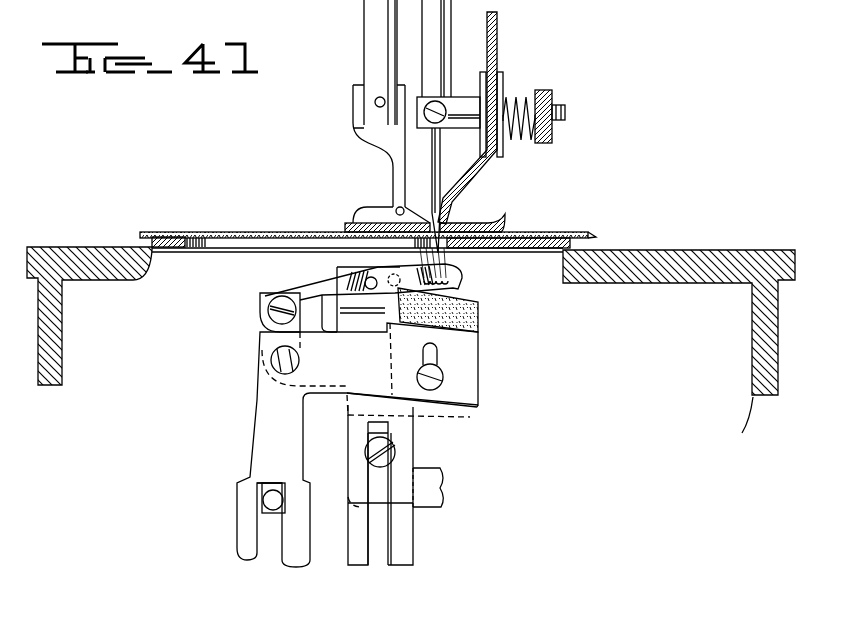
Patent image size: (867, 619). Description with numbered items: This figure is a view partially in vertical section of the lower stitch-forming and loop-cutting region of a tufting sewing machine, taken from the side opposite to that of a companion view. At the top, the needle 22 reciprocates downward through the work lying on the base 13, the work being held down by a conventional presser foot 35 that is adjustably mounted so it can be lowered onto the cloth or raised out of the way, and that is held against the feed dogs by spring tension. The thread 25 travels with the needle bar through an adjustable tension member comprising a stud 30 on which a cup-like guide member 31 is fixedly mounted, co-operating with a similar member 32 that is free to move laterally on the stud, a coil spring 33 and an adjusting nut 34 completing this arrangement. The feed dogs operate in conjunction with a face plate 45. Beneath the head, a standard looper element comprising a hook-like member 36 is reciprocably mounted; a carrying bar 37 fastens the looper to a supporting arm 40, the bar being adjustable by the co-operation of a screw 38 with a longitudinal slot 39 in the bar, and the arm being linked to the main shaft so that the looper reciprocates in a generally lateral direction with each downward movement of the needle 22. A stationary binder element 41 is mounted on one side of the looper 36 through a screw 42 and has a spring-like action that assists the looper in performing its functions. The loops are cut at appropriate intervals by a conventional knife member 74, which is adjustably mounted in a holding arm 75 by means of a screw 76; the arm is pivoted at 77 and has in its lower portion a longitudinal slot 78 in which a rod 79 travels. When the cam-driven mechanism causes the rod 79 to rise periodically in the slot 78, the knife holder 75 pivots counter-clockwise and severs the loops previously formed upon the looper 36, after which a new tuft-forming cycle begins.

The base 13 is at (100, 247).
The needle 22 is at (458, 176).
The thread 25 is at (496, 26).
The stud 30 is at (565, 112).
The cup-like guide member 31 is at (482, 78).
The cup-like guide member 32 is at (502, 78).
The coil spring 33 is at (521, 141).
The adjusting nut 34 is at (552, 92).
The presser foot 35 is at (500, 232).
The hook-like member 36 is at (461, 283).
The carrying bar 37 is at (414, 437).
The screw 38 is at (396, 453).
The longitudinal slot 39 is at (373, 552).
The supporting arm 40 is at (441, 503).
The binder element 41 is at (322, 287).
The screw 42 is at (272, 300).
The face plate 45 is at (580, 240).
The knife member 74 is at (479, 311).
The holding arm 75 is at (478, 362).
The screw 76 is at (443, 376).
The pivot 77 is at (271, 360).
The longitudinal slot 78 is at (258, 543).
The rod 79 is at (270, 507).